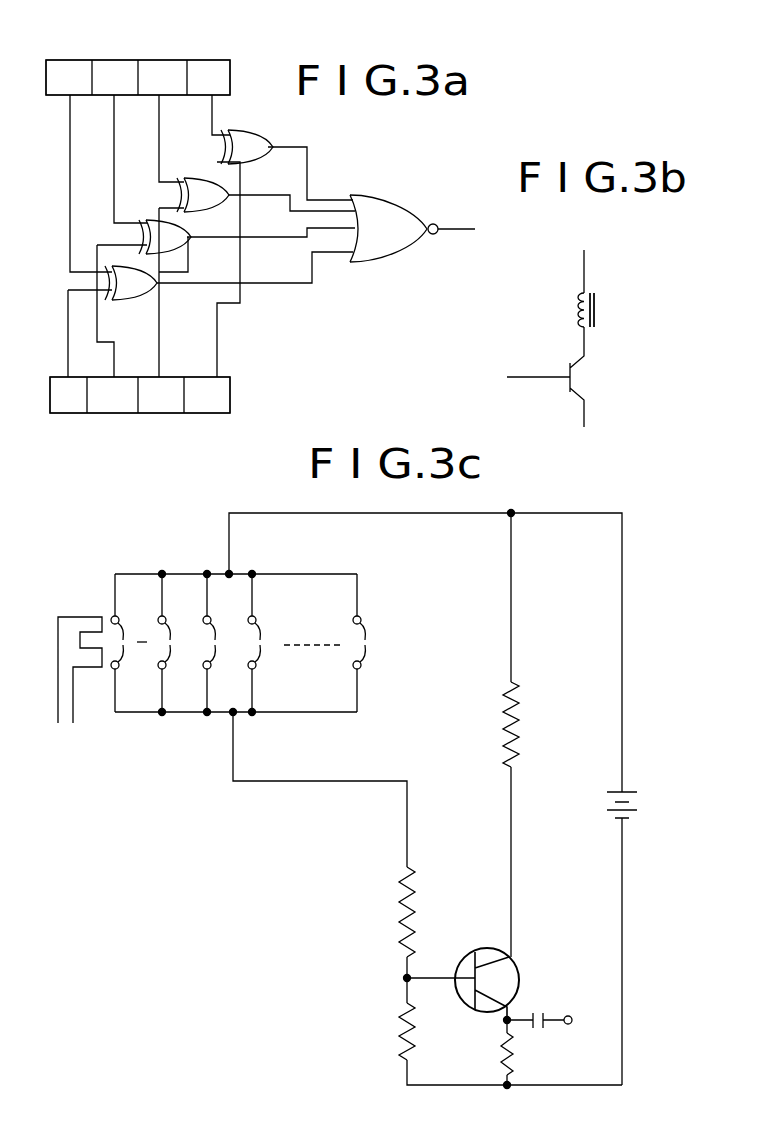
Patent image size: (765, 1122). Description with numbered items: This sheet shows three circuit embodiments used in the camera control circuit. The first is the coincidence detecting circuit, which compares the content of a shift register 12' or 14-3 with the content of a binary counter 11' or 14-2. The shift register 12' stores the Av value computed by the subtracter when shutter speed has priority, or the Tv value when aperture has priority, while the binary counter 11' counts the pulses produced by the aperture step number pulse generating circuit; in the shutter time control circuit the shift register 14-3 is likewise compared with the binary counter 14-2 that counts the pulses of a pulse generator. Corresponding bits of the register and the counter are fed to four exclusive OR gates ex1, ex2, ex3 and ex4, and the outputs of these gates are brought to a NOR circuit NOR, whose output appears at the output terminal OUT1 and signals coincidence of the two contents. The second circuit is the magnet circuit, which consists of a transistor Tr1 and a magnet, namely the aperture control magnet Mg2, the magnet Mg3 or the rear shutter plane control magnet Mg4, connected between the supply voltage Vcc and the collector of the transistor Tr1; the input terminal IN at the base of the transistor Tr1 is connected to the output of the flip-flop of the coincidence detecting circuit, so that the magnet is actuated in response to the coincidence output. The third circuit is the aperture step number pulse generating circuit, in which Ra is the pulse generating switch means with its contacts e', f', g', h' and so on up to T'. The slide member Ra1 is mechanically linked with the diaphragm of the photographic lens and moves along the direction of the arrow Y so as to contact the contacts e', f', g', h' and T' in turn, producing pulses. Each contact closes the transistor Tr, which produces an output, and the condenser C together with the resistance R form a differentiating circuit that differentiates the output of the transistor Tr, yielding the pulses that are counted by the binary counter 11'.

In FIG. 3a, the shift register 12' is at (159, 53).
In FIG. 3a, the shift register 14-3 is at (159, 53).
In FIG. 3a, the binary counter 11' is at (140, 420).
In FIG. 3a, the binary counter 14-2 is at (140, 420).
In FIG. 3a, the exclusive OR gate ex1 is at (247, 147).
In FIG. 3a, the exclusive OR gate ex2 is at (203, 195).
In FIG. 3a, the exclusive OR gate ex3 is at (165, 237).
In FIG. 3a, the exclusive OR gate ex4 is at (131, 283).
In FIG. 3a, the NOR circuit NOR is at (394, 228).
In FIG. 3a, the output terminal OUT1 is at (465, 229).
In FIG. 3b, the supply voltage Vcc is at (585, 260).
In FIG. 3b, the aperture control magnet Mg2 is at (634, 312).
In FIG. 3b, the magnet Mg3 is at (640, 312).
In FIG. 3b, the rear shutter plane control magnet Mg4 is at (624, 327).
In FIG. 3b, the transistor Tr1 is at (584, 377).
In FIG. 3b, the input terminal IN is at (537, 365).
In FIG. 3c, the pulse generating switch means Ra is at (115, 573).
In FIG. 3c, the slide member Ra1 is at (58, 716).
In FIG. 3c, the contact e' is at (122, 643).
In FIG. 3c, the contact f' is at (171, 643).
In FIG. 3c, the contact g' is at (219, 643).
In FIG. 3c, the contact h' is at (264, 643).
In FIG. 3c, the contact T' is at (371, 643).
In FIG. 3c, the transistor Tr is at (481, 950).
In FIG. 3c, the condenser C is at (540, 1012).
In FIG. 3c, the resistance R is at (516, 1052).